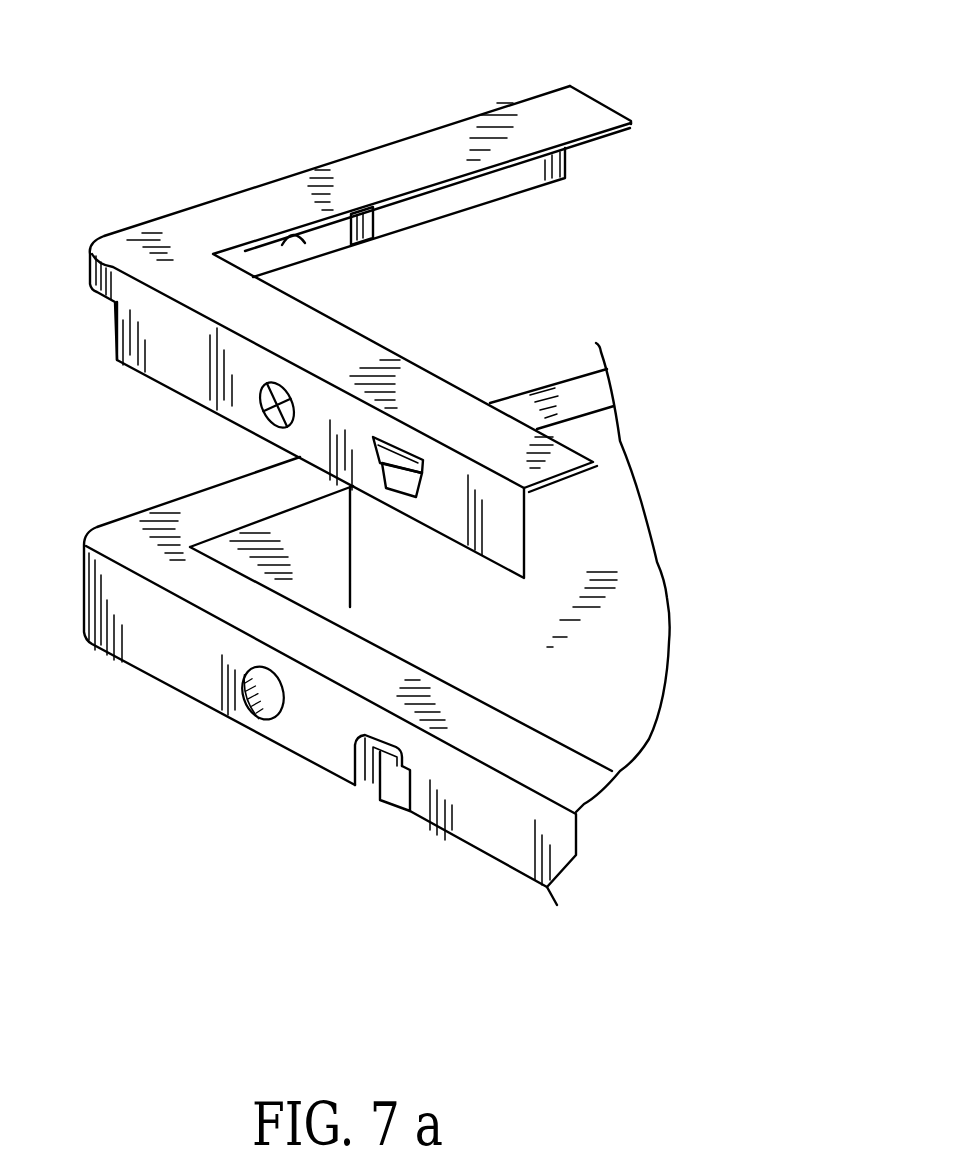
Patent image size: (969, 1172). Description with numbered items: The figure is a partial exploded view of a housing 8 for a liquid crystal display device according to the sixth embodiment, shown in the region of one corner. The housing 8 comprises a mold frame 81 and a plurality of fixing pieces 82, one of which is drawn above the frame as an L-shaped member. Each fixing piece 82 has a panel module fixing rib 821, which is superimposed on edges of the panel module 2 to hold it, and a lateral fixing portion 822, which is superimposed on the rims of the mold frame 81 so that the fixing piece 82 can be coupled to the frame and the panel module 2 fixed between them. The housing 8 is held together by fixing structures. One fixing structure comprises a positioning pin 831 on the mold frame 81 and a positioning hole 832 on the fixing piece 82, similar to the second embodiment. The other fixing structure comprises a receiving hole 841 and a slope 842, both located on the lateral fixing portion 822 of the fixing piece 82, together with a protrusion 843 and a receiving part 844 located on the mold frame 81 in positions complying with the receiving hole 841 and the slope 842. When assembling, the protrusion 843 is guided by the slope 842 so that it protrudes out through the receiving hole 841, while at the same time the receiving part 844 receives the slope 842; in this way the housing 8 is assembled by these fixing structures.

The housing 8 is at (280, 90).
The fixing piece 82 is at (393, 153).
The panel module fixing rib 821 is at (583, 118).
The lateral fixing portion 822 is at (163, 350).
The positioning hole 832 is at (262, 420).
The receiving hole 841 is at (400, 455).
The slope 842 is at (395, 485).
The positioning pin 831 is at (258, 720).
The protrusion 843 is at (360, 783).
The receiving part 844 is at (397, 793).
The mold frame 81 is at (577, 390).
The panel module 2 is at (668, 598).